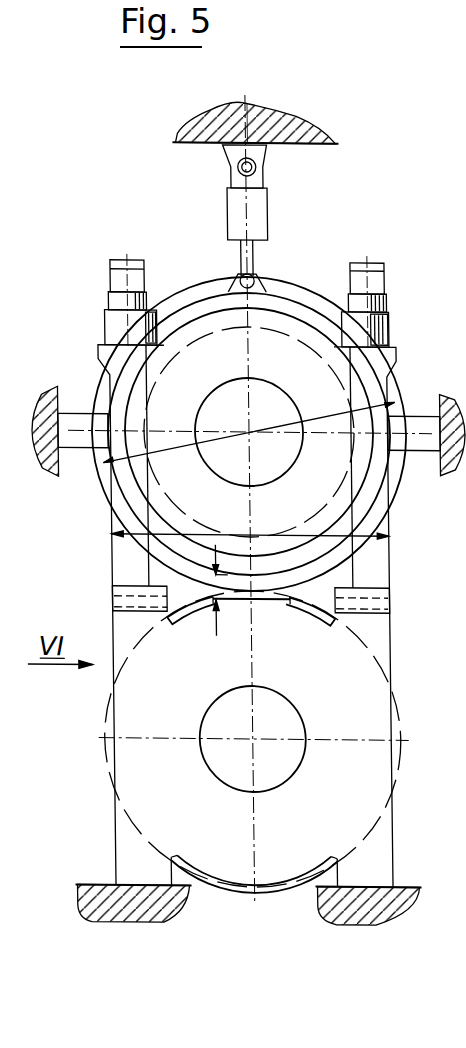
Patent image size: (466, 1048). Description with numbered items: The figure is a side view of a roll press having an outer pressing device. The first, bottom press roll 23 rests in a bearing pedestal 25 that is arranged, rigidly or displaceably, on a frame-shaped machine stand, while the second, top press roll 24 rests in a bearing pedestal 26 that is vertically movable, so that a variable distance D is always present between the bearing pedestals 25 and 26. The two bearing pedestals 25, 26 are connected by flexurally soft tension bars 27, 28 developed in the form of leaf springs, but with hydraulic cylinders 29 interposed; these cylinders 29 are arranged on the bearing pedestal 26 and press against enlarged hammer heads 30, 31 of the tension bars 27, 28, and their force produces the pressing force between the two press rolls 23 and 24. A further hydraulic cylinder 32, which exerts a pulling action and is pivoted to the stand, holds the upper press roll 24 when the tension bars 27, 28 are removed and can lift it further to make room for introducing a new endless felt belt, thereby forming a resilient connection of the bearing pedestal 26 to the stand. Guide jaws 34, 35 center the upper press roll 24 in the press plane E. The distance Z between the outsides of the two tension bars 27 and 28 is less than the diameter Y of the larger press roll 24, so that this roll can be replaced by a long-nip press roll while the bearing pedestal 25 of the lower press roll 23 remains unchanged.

The first, bottom press roll 23 is at (394, 727).
The second, top press roll 24 is at (392, 472).
The bearing pedestal 25 is at (373, 845).
The bearing pedestal 26 is at (291, 309).
The tension bar 27 is at (370, 571).
The tension bar 28 is at (117, 571).
The hydraulic cylinder 29 is at (118, 326).
The hammer head 30 is at (363, 268).
The hammer head 31 is at (142, 259).
The hydraulic cylinder 32 is at (265, 217).
The guide jaw 34 is at (76, 414).
The guide jaw 35 is at (413, 416).